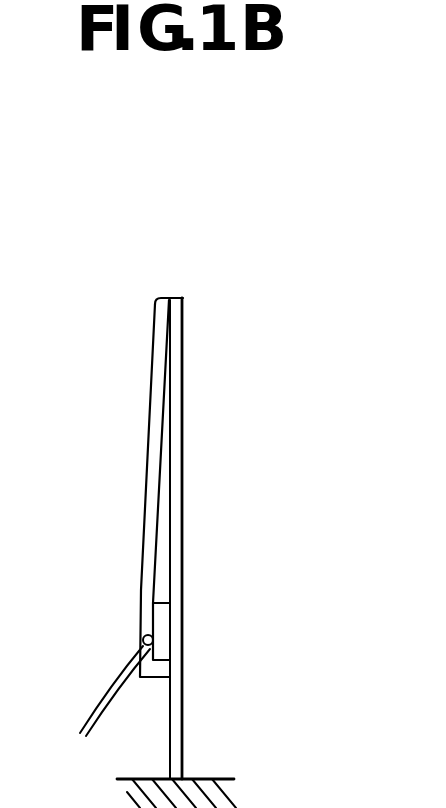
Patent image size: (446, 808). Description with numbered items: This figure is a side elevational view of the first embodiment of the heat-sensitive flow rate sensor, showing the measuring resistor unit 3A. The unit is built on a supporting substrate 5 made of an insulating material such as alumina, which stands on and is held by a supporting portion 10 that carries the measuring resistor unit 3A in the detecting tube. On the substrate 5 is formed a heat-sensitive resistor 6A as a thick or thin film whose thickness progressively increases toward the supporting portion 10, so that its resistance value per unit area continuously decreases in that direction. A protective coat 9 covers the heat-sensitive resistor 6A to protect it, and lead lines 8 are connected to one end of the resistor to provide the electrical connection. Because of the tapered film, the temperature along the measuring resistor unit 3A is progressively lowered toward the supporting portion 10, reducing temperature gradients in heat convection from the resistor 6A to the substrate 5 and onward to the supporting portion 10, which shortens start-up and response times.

The measuring resistor unit 3A is at (169, 250).
The supporting substrate 5 is at (175, 714).
The heat-sensitive resistor 6A is at (163, 545).
The lead lines 8 is at (104, 681).
The protective coat 9 is at (148, 433).
The supporting portion 10 is at (286, 797).